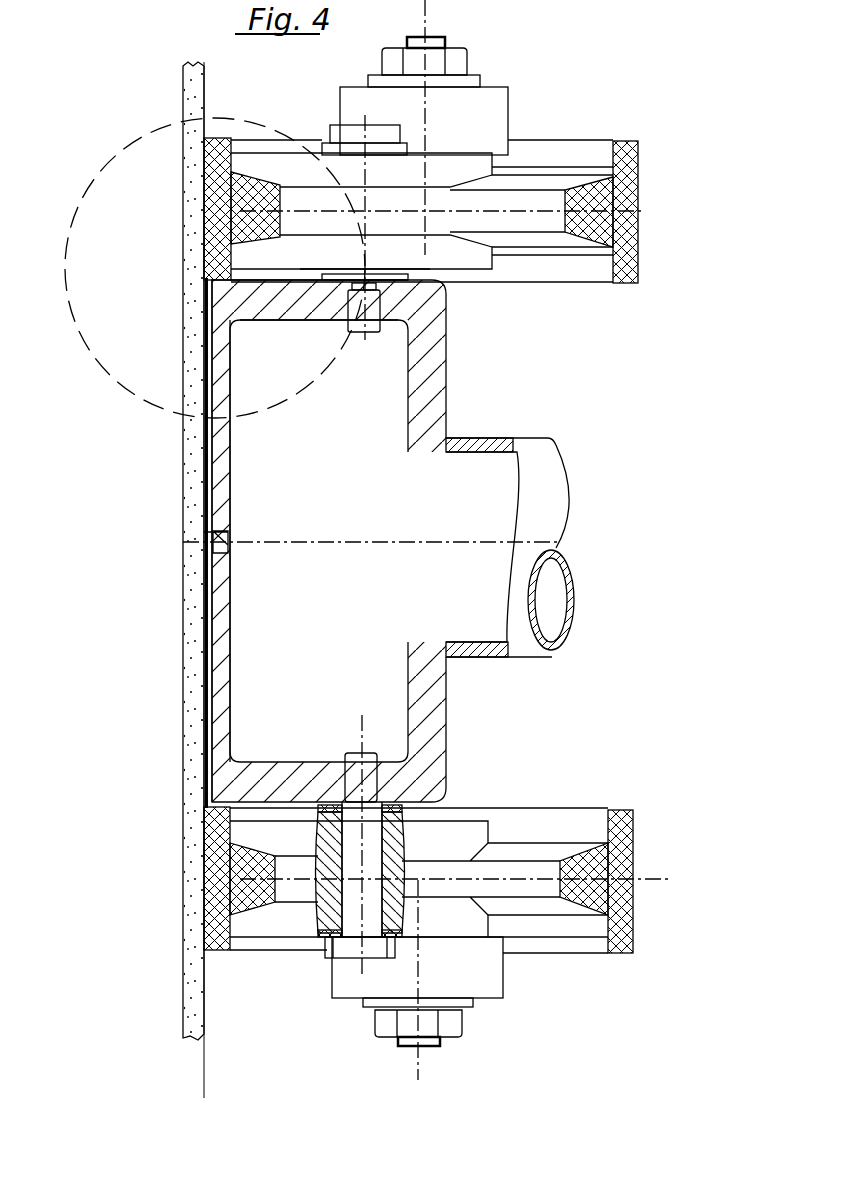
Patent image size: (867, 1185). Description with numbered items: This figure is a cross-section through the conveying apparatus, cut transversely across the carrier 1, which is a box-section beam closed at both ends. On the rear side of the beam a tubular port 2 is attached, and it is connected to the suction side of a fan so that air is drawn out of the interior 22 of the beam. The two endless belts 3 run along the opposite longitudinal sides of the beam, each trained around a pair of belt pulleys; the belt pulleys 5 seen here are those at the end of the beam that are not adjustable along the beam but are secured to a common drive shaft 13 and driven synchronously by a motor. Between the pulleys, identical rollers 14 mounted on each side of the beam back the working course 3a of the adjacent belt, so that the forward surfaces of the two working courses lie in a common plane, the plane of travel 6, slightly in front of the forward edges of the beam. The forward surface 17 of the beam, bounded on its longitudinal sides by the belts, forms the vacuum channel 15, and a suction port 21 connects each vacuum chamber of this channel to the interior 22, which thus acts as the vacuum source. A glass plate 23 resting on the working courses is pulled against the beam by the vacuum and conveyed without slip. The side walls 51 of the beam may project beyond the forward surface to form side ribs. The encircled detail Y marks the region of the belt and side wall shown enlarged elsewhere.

The carrier 1 is at (425, 360).
The tubular ports 2 is at (543, 467).
The endless belts 3 is at (633, 232).
The working course 3a is at (231, 172).
The belt pulleys 5 is at (587, 146).
The plane of travel 6 is at (202, 1078).
The common drive shaft 13 is at (460, 50).
The rollers 14 is at (597, 168).
The vacuum channel 15 is at (207, 408).
The forward surface 17 is at (218, 655).
The suction port 21 is at (222, 535).
The interior 22 is at (319, 541).
The glass plate 23 is at (200, 575).
The side walls 51 is at (227, 295).
The detail circle Y is at (85, 350).